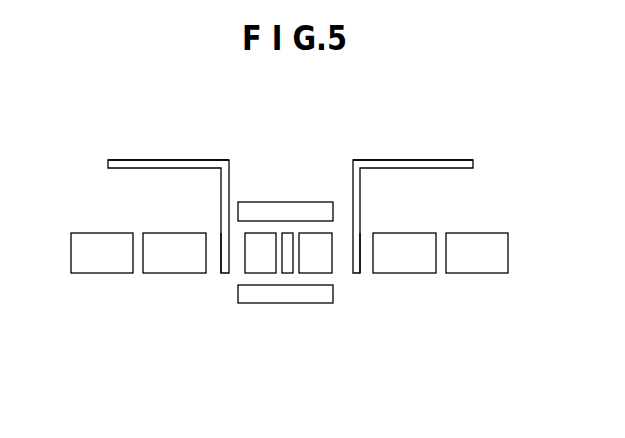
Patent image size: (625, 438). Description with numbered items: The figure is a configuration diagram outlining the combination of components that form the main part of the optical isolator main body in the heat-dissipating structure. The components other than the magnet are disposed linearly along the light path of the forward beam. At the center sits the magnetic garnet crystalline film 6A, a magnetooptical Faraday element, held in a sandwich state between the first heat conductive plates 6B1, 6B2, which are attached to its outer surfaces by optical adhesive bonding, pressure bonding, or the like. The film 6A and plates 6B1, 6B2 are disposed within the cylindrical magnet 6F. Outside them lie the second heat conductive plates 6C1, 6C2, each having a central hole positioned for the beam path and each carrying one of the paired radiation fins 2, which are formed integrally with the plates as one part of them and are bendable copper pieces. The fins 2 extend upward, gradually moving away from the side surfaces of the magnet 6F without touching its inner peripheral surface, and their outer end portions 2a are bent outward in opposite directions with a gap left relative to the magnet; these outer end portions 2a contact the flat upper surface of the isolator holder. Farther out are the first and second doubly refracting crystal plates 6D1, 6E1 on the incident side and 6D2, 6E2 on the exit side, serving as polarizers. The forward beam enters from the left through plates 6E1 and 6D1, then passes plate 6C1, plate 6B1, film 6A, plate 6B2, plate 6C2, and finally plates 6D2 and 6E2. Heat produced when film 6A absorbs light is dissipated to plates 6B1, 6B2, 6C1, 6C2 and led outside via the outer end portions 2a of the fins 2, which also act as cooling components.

The radiation fin 2 is at (226, 197).
The outer end portion 2a is at (168, 160).
The magnetic garnet crystalline film 6A is at (288, 267).
The first heat conductive plate 6B1 is at (255, 267).
The first heat conductive plate 6B2 is at (307, 267).
The second heat conductive plate 6C1 is at (222, 253).
The second heat conductive plate 6C2 is at (358, 253).
The first doubly refracting crystal plate 6D1 is at (157, 267).
The first doubly refracting crystal plate 6D2 is at (417, 270).
The second doubly refracting crystal plate 6E1 is at (93, 267).
The second doubly refracting crystal plate 6E2 is at (485, 267).
The magnet 6F is at (287, 212).